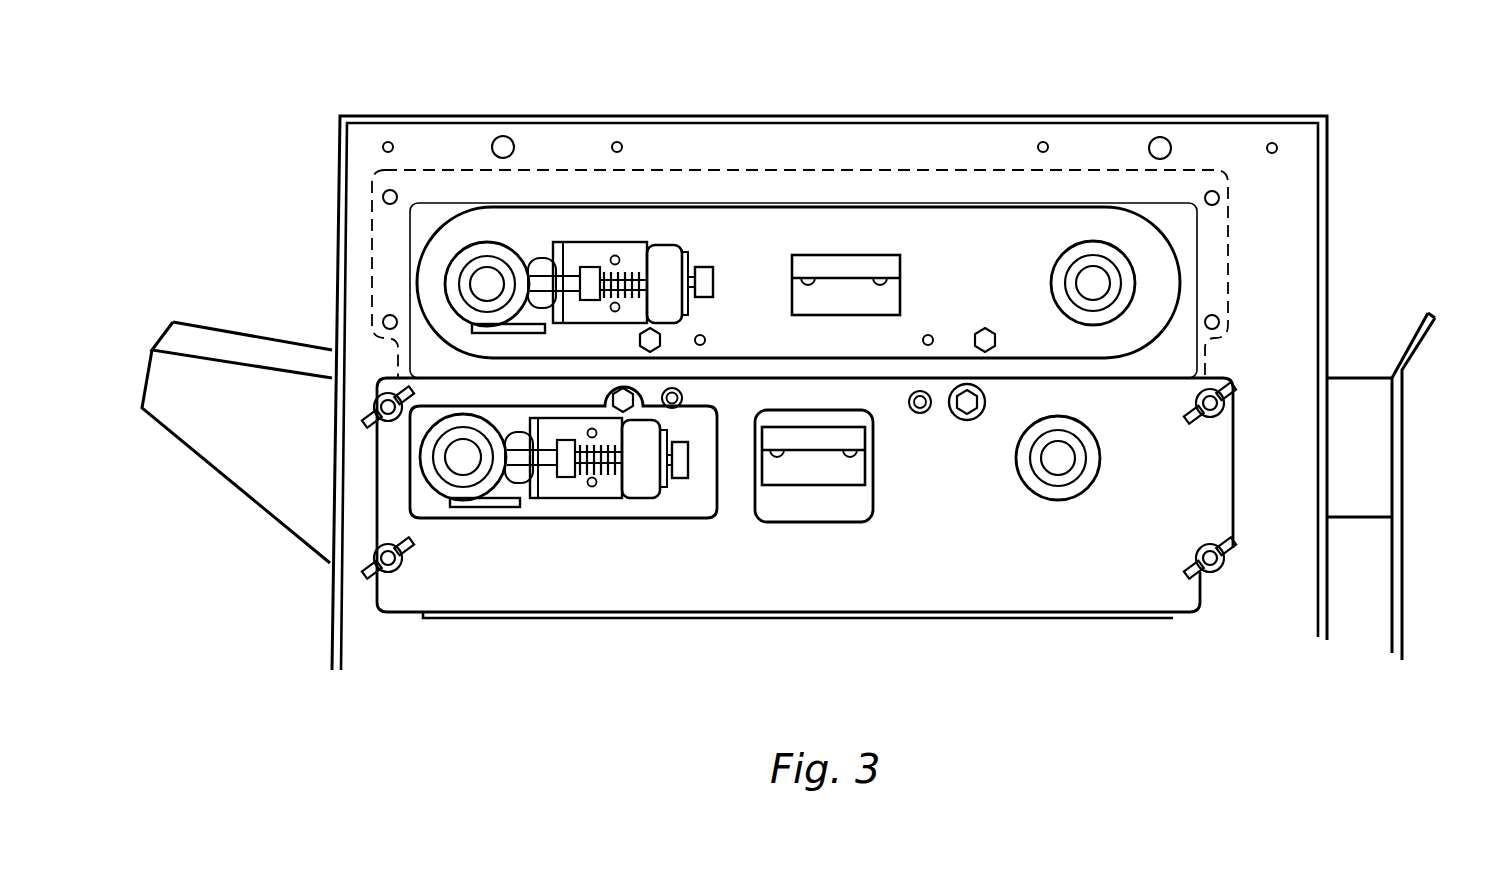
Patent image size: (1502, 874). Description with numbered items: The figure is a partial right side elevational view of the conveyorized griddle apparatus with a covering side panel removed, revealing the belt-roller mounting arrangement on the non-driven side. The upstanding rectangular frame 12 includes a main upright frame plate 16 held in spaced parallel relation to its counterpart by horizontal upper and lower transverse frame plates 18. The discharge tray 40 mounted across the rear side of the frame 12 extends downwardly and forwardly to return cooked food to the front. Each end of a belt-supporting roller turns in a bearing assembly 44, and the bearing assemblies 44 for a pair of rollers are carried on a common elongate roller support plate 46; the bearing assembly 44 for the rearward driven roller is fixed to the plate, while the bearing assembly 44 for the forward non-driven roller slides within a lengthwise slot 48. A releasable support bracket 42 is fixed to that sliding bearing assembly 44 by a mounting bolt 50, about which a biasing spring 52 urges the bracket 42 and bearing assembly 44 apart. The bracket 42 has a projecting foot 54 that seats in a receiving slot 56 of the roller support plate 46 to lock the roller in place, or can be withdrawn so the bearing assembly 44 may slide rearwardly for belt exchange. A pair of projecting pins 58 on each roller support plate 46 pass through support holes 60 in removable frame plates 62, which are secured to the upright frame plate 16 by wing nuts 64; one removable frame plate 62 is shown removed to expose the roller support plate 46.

The frame 12 is at (1235, 117).
The upright frame plate 16 is at (1287, 223).
The transverse frame plate 18 is at (808, 117).
The discharge tray 40 is at (1397, 487).
The releasable support bracket 42 is at (625, 243).
The bearing assembly 44 is at (470, 282).
The roller support plate 46 is at (859, 246).
The lengthwise slot 48 is at (530, 260).
The mounting bolt 50 is at (573, 260).
The biasing spring 52 is at (635, 260).
The projecting foot 54 is at (692, 310).
The receiving slot 56 is at (693, 257).
The projecting pin 58 is at (923, 340).
The support hole 60 is at (920, 413).
The removable frame plate 62 is at (1233, 252).
The wing nut 64 is at (1220, 578).